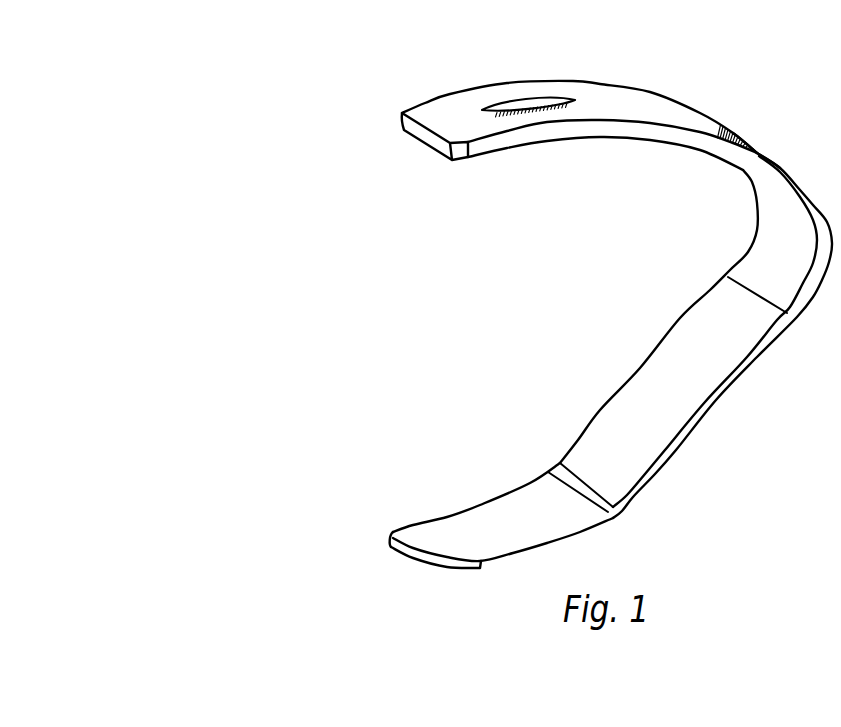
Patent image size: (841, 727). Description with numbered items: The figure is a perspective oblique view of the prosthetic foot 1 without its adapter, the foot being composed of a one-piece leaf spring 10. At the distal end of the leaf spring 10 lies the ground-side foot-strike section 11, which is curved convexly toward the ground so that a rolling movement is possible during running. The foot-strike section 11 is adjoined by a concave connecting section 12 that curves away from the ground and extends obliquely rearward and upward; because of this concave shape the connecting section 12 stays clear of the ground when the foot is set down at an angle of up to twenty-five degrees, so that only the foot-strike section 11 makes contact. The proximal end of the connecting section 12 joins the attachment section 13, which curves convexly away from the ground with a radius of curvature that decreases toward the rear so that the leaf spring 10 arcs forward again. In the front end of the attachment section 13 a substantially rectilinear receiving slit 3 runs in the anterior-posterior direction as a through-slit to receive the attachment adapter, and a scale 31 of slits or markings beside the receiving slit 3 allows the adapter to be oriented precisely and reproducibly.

The prosthetic foot 1 is at (611, 307).
The receiving slit 3 is at (512, 105).
The scale 31 is at (537, 113).
The leaf spring 10 is at (579, 120).
The foot-strike section 11 is at (590, 555).
The connecting section 12 is at (740, 391).
The attachment section 13 is at (734, 107).